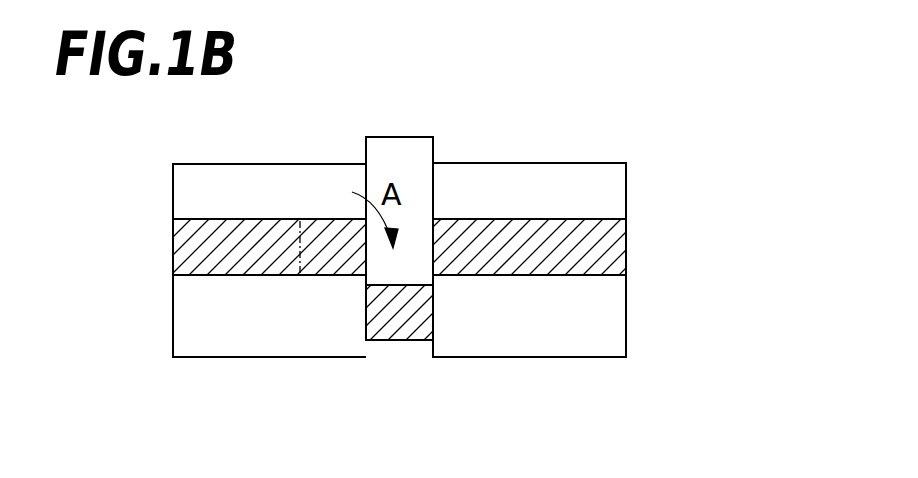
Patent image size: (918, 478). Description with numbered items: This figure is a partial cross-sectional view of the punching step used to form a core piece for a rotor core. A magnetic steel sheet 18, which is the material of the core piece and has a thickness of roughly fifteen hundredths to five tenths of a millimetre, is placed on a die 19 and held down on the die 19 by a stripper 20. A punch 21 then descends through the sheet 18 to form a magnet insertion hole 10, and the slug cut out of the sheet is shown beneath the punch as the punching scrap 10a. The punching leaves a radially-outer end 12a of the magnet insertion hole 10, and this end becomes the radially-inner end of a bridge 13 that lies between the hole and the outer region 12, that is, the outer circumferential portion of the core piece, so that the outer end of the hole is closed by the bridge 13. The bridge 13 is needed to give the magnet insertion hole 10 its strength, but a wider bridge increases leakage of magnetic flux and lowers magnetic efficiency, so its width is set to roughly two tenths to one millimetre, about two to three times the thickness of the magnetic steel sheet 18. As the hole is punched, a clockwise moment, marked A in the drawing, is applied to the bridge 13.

The magnet insertion hole 10 is at (430, 240).
The punching scrap 10a is at (415, 337).
The outer region 12 is at (185, 257).
The radially-outer end 12a is at (365, 258).
The bridge 13 is at (333, 252).
The magnetic steel sheet 18 is at (612, 238).
The die 19 is at (607, 317).
The stripper 20 is at (467, 183).
The punch 21 is at (395, 148).